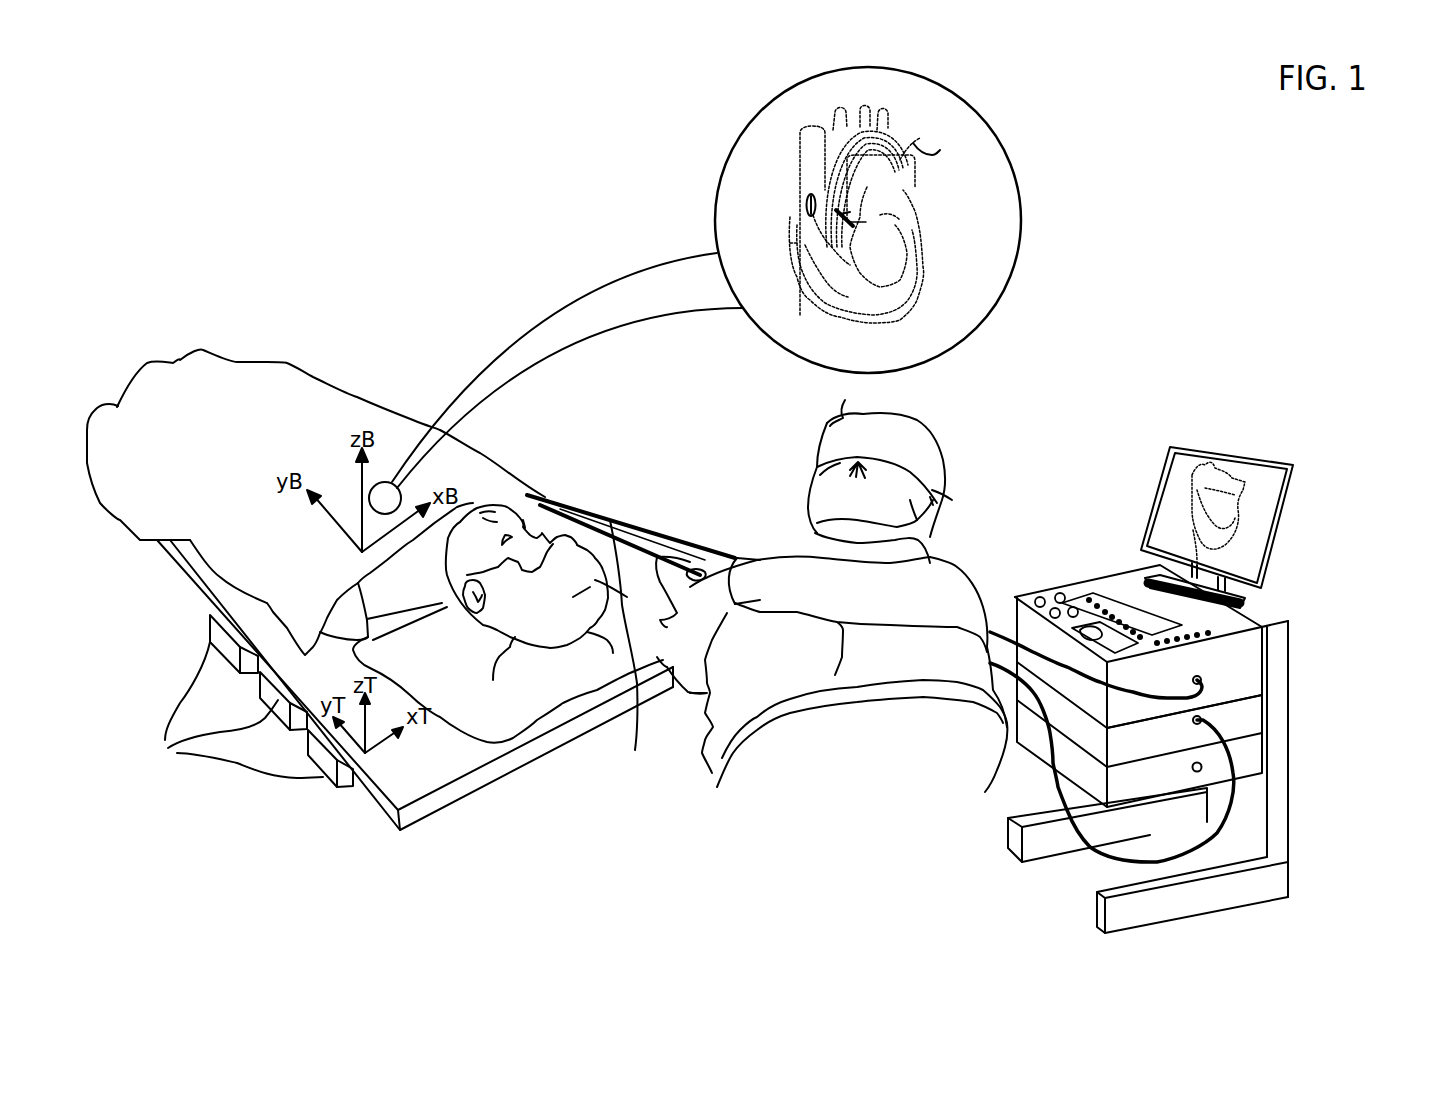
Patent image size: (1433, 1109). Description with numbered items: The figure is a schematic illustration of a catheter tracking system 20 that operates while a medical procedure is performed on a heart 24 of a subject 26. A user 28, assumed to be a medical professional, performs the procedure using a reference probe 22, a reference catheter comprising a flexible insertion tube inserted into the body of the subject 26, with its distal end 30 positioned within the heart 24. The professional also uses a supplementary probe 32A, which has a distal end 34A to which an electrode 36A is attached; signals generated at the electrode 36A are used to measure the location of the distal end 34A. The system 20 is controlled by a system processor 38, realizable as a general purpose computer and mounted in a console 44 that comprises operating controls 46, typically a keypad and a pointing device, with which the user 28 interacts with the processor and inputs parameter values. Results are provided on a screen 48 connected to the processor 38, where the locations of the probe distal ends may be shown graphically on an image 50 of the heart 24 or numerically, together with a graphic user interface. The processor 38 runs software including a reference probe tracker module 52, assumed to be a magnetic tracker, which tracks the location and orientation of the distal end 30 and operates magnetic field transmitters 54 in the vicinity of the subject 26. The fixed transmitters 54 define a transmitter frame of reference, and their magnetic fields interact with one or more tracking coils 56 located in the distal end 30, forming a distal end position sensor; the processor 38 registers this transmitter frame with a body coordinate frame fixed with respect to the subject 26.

The catheter tracking system 20 is at (1273, 322).
The reference probe 22 is at (686, 538).
The heart 24 is at (907, 281).
The subject 26 is at (375, 545).
The user 28 is at (831, 585).
The distal end of the reference probe 30 is at (872, 217).
The supplementary probe 32A is at (631, 653).
The distal end of supplementary probe 34A is at (803, 210).
The electrode 36A is at (706, 158).
The system processor 38 is at (1242, 660).
The console 44 is at (1288, 758).
The operating controls 46 is at (1057, 573).
The screen 48 is at (1298, 468).
The image of heart 50 is at (1197, 491).
The reference probe tracker module 52 is at (1242, 671).
The magnetic field transmitters 54 is at (403, 685).
The tracking coils 56 is at (1022, 166).